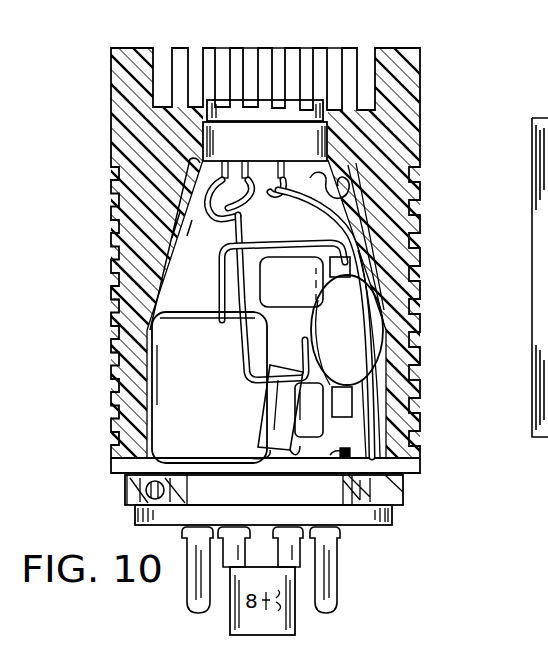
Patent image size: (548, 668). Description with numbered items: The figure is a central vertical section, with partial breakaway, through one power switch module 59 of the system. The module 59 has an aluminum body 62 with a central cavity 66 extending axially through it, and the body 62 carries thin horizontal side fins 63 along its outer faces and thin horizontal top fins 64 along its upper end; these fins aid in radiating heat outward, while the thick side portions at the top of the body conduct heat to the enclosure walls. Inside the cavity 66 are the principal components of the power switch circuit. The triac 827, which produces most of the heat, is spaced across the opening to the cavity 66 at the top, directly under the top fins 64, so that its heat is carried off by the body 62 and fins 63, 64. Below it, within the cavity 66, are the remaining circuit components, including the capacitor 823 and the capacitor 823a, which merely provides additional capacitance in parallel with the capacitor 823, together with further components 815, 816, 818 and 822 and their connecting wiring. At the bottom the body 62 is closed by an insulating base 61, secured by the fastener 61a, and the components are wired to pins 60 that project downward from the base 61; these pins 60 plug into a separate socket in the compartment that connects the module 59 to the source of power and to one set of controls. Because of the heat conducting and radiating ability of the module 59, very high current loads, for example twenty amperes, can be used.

The module 59 is at (104, 166).
The pins 60 is at (288, 554).
The insulating base 61 is at (393, 504).
The base fastener 61a is at (152, 480).
The aluminum body 62 is at (123, 426).
The side fins 63 is at (118, 346).
The top fins 64 is at (264, 52).
The central cavity 66 is at (348, 178).
The bent conductor 815 is at (342, 256).
The connector block 816 is at (345, 397).
The capacitor 818 is at (173, 368).
The component 822 is at (280, 412).
The capacitor 823 is at (262, 273).
The capacitor 823a is at (372, 302).
The triac 827 is at (263, 110).